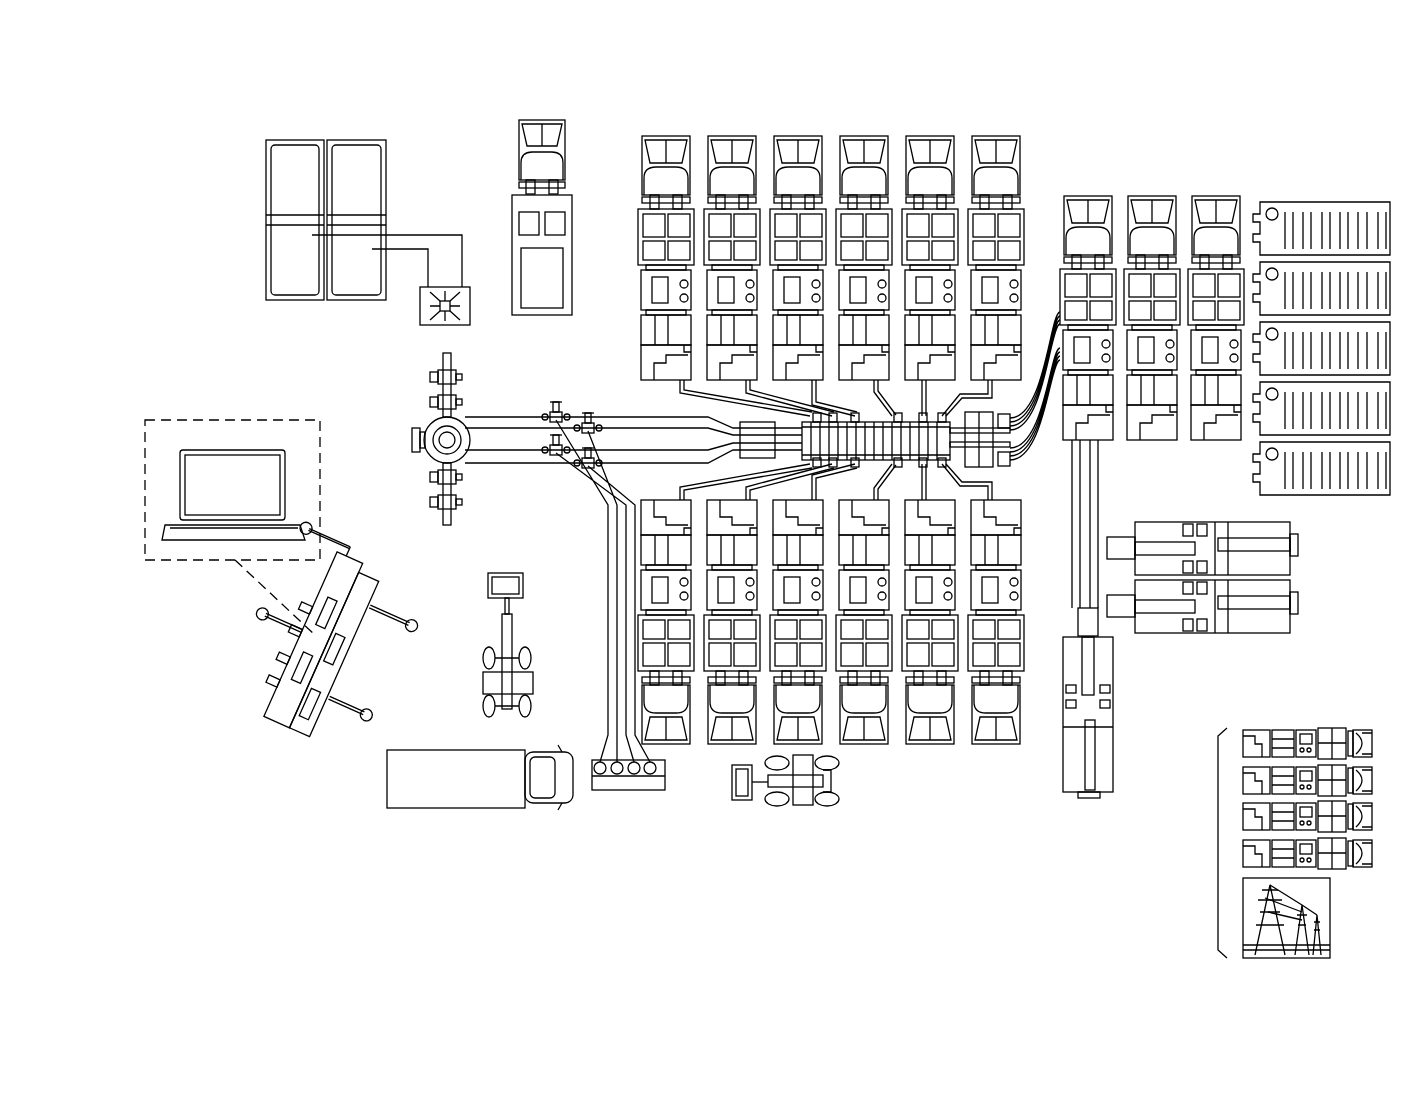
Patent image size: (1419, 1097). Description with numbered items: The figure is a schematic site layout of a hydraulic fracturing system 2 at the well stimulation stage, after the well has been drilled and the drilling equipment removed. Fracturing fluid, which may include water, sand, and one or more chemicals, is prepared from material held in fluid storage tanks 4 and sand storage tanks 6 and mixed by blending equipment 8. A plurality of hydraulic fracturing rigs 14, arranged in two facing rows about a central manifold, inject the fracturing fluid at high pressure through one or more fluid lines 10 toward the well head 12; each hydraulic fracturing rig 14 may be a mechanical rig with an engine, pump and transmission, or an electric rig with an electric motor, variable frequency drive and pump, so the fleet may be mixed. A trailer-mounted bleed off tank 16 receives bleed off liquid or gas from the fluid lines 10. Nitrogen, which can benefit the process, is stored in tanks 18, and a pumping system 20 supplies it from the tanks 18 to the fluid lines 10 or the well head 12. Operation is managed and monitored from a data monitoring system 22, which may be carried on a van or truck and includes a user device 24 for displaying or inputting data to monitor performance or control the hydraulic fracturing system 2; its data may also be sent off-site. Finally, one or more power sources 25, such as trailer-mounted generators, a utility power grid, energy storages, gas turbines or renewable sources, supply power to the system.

The hydraulic fracturing system 2 is at (1230, 84).
The fluid storage tanks 4 is at (1158, 652).
The sand storage tanks 6 is at (1371, 508).
The blending equipment 8 is at (1072, 160).
The fluid lines 10 is at (592, 380).
The well head 12 is at (405, 408).
The hydraulic fracturing rigs 14 is at (1010, 128).
The trailer-mounted bleed off tank 16 is at (467, 787).
The tanks 18 is at (298, 106).
The pumping system 20 is at (410, 312).
The data monitoring system 22 is at (272, 681).
The user device 24 is at (170, 440).
The power sources 25 is at (1218, 842).